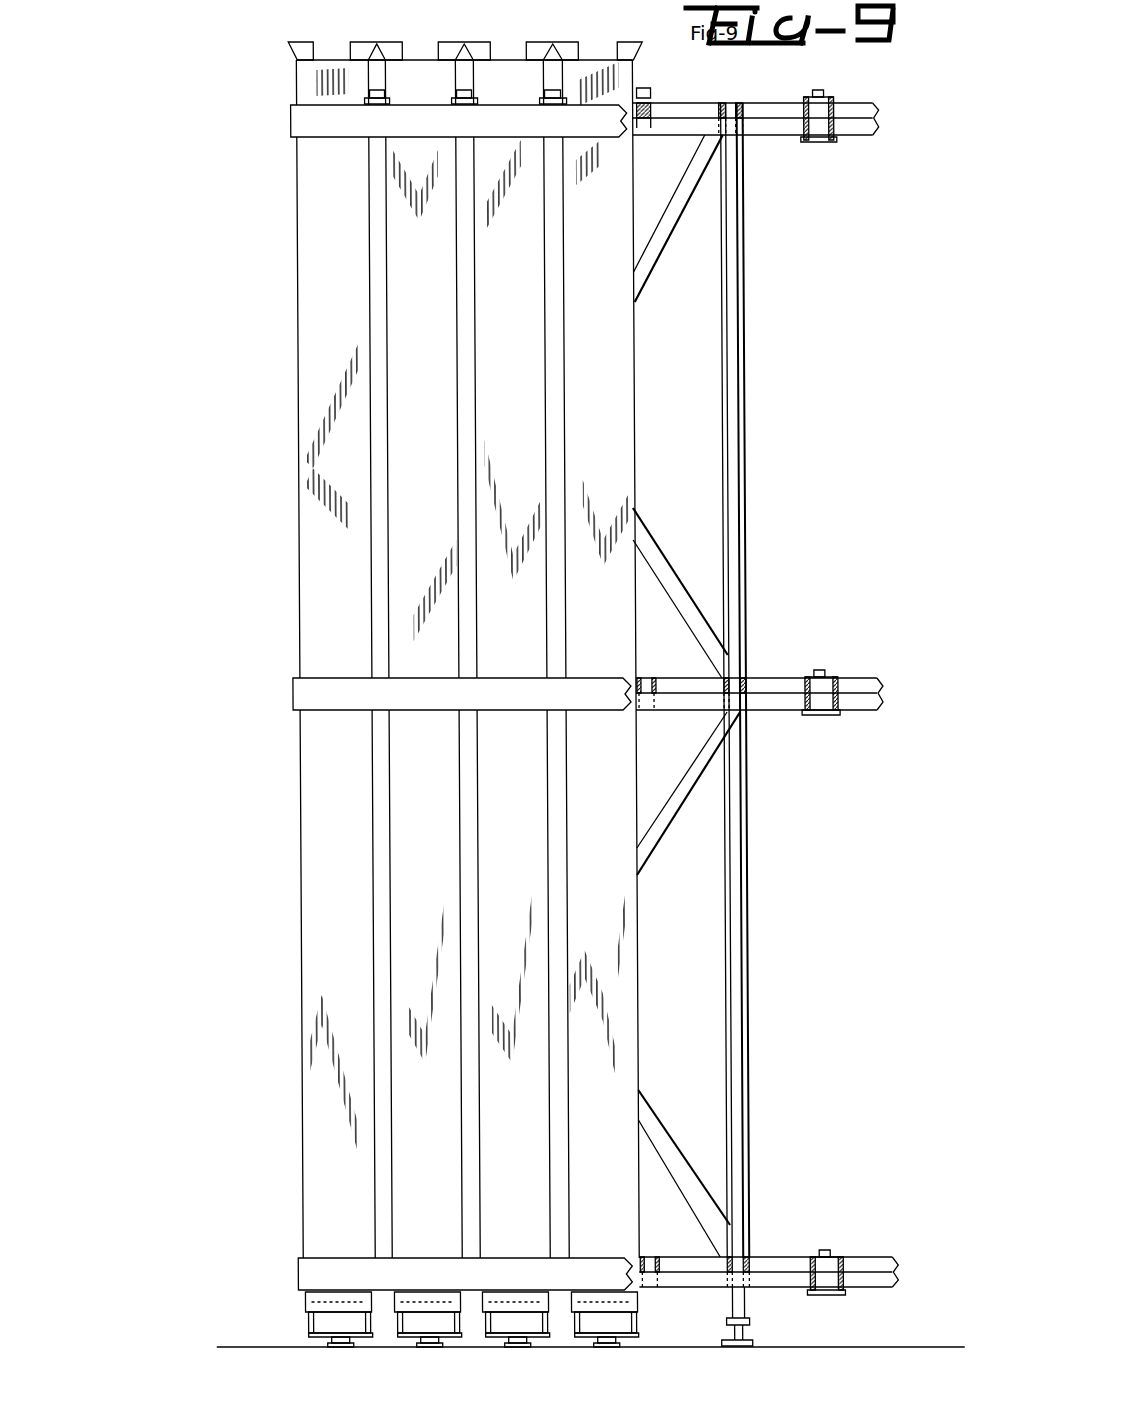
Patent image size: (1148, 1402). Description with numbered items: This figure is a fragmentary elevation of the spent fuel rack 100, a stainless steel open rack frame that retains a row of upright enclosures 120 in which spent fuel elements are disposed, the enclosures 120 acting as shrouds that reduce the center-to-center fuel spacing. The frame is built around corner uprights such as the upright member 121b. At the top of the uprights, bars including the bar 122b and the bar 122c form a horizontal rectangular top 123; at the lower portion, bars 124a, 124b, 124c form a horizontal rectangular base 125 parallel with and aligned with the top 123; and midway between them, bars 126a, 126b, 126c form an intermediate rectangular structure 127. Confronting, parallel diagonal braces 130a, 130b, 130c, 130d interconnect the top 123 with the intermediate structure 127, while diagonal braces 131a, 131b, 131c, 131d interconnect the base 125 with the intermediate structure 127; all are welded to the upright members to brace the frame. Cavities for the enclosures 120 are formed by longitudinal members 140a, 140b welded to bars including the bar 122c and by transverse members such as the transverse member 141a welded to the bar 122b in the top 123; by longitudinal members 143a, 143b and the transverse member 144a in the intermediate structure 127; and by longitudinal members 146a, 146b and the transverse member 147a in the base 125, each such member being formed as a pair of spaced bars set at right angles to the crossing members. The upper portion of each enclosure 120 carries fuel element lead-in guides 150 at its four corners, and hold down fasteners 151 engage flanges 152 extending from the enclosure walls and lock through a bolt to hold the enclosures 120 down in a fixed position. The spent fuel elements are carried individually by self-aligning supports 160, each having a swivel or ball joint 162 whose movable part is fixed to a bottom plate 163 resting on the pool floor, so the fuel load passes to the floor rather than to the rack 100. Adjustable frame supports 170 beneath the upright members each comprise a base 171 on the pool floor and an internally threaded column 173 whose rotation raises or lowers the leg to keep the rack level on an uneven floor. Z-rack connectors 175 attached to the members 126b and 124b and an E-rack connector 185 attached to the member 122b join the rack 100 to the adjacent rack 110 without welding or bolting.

The spent fuel rack 100 is at (253, 77).
The adjacent spent fuel rack 110 is at (885, 112).
The upright enclosure 120 is at (548, 393).
The upright member 121b is at (736, 422).
The bar 122b is at (290, 125).
The bar 122c is at (766, 100).
The top 123 is at (288, 139).
The bar 124a is at (298, 1275).
The bar 124b is at (810, 1255).
The bar 124c is at (703, 1257).
The base 125 is at (322, 1262).
The bar 126a is at (291, 693).
The bar 126b is at (803, 712).
The bar 126c is at (772, 680).
The intermediate rectangular structure 127 is at (296, 684).
The diagonal brace 130a is at (655, 258).
The diagonal brace 130b is at (647, 540).
The diagonal brace 130c is at (655, 835).
The diagonal brace 130d is at (656, 1107).
The diagonal brace 131a is at (720, 335).
The diagonal brace 131b is at (745, 365).
The diagonal brace 131c is at (746, 940).
The diagonal brace 131d is at (722, 953).
The longitudinal member 140a is at (718, 118).
The longitudinal member 140b is at (660, 100).
The transverse member 141a is at (768, 128).
The longitudinal member 143a is at (745, 680).
The longitudinal member 143b is at (650, 678).
The transverse member 144a is at (694, 706).
The longitudinal member 146a is at (752, 1272).
The longitudinal member 146b is at (658, 1262).
The transverse member 147a is at (628, 1281).
The fuel element lead-in guide 150 is at (359, 44).
The hold down fastener 151 is at (455, 92).
The flange 152 is at (393, 113).
The self-aligning support 160 is at (302, 1326).
The swivel or ball joint 162 is at (330, 1344).
The bottom plate 163 is at (598, 1342).
The adjustable frame support 170 is at (753, 1320).
The base 171 is at (756, 1342).
The internally threaded column 173 is at (733, 1307).
The Z-rack connector 175 is at (838, 670).
The E-rack connector 185 is at (838, 92).